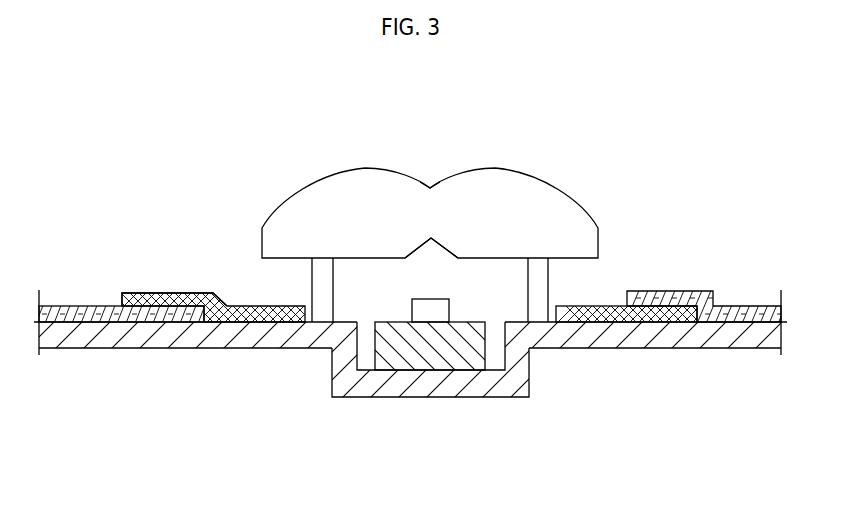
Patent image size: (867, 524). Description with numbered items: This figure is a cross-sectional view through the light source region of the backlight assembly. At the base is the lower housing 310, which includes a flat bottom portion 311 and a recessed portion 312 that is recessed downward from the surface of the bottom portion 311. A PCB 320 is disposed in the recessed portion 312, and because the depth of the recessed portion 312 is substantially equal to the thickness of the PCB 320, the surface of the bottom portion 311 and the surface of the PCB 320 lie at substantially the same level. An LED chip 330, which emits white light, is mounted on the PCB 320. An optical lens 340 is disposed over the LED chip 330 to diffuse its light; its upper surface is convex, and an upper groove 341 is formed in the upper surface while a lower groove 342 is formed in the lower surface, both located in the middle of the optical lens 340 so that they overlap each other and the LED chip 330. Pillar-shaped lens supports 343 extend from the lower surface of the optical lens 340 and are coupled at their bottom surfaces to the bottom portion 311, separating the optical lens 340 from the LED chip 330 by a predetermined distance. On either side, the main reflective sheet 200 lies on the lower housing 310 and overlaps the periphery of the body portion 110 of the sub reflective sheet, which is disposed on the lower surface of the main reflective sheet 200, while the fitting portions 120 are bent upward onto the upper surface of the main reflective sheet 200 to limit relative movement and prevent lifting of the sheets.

The body portion 110 is at (262, 308).
The fitting portion 120 is at (150, 300).
The main reflective sheet 200 is at (137, 316).
The lower housing 310 is at (433, 387).
The bottom portion 311 is at (232, 337).
The recessed portion 312 is at (397, 388).
The PCB 320 is at (443, 353).
The LED chip 330 is at (442, 311).
The optical lens 340 is at (435, 206).
The upper groove 341 is at (431, 166).
The lower groove 342 is at (431, 256).
The lens support 343 is at (546, 278).